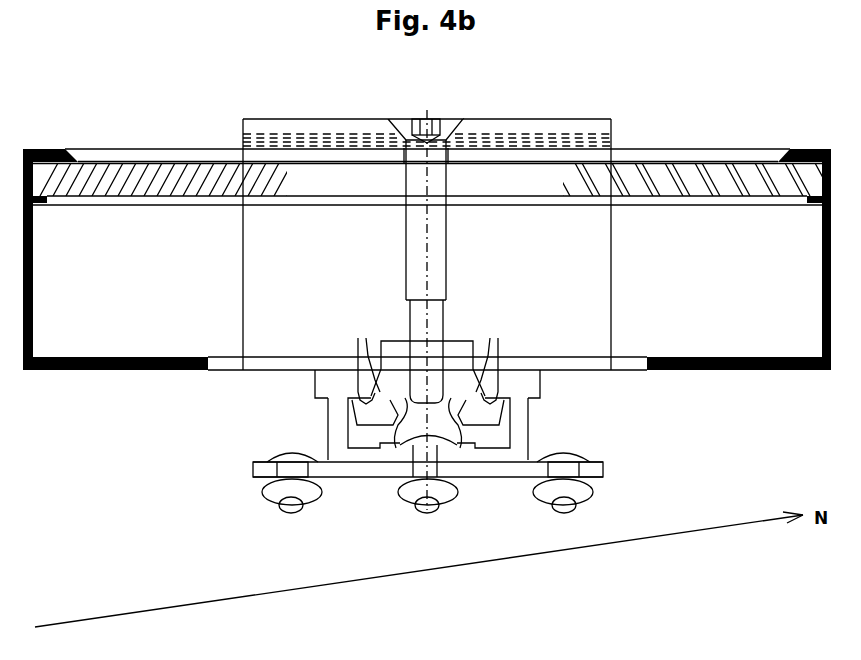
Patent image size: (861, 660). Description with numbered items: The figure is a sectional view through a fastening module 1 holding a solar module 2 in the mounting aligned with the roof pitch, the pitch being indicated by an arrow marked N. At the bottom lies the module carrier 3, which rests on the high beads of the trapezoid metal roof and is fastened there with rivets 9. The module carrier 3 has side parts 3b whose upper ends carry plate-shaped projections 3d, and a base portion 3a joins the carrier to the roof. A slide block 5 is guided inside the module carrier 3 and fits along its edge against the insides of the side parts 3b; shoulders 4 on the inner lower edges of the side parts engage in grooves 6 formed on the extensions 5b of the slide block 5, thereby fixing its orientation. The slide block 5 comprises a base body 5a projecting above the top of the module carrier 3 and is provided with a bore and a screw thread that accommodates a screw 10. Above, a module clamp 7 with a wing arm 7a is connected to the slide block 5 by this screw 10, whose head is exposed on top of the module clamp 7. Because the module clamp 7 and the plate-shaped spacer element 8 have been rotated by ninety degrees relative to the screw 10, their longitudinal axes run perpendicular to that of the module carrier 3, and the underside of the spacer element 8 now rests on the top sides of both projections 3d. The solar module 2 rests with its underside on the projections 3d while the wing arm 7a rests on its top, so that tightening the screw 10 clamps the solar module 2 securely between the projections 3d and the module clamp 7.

The fastening module 1 is at (313, 100).
The solar module 2 is at (160, 128).
The module carrier 3 is at (428, 462).
The carriage base rail 3a is at (504, 470).
The side part 3b is at (328, 427).
The plate-shaped projection 3d is at (315, 383).
The shoulder 4 is at (357, 378).
The slide block 5 is at (466, 330).
The base body 5a is at (395, 345).
The extension 5b is at (392, 440).
The groove 6 is at (372, 410).
The module clamp 7 is at (497, 117).
The wing arm 7a is at (593, 130).
The spacer element 8 is at (603, 261).
The rivet 9 is at (270, 497).
The screw 10 is at (440, 225).